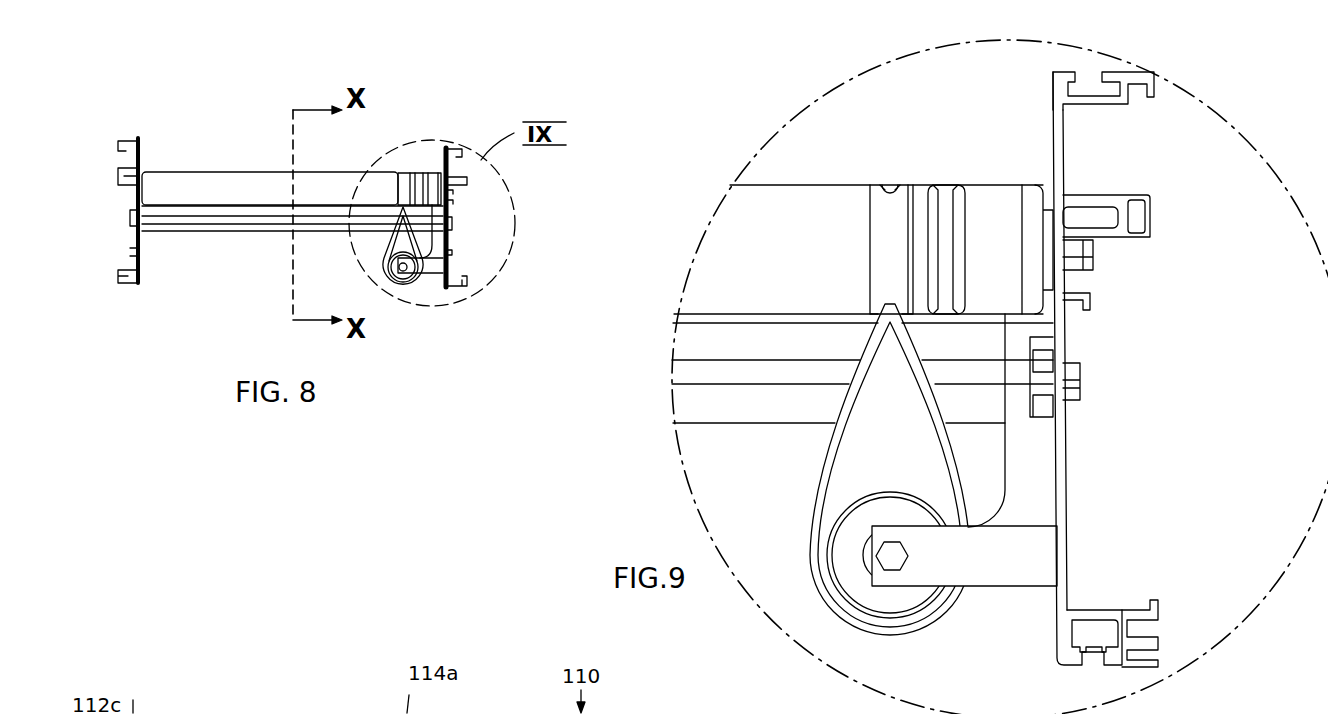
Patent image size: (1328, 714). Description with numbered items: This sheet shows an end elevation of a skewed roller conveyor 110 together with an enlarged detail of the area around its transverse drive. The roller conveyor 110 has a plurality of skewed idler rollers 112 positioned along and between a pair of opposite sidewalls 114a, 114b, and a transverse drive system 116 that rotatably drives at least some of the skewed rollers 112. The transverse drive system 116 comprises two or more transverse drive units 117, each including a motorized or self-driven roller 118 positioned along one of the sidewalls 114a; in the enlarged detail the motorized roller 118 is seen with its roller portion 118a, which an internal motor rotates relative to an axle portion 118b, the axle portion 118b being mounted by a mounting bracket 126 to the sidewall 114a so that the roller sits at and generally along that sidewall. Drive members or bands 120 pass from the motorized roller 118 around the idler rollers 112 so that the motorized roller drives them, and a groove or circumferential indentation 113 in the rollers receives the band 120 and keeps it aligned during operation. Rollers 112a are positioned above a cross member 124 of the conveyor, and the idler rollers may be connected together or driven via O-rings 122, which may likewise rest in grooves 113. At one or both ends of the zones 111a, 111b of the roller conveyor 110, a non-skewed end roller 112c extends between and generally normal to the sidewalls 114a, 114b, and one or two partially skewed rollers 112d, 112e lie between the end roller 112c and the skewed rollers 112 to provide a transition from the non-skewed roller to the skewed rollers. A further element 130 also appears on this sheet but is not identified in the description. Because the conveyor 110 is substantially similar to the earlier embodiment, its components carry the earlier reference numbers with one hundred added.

In FIG. 8, the roller conveyor 110 is at (206, 134).
In FIG. 8, the zone 111a is at (309, 710).
In FIG. 9, the zone 111b is at (835, 713).
In FIG. 8, the skewed idler roller 112 is at (360, 704).
In FIG. 8, the roller 112a is at (363, 703).
In FIG. 8, the end roller 112c is at (225, 184).
In FIG. 9, the end roller 112c is at (783, 200).
In FIG. 8, the partially skewed roller 112d is at (145, 680).
In FIG. 9, the partially skewed roller 112d is at (1175, 704).
In FIG. 8, the partially skewed roller 112e is at (185, 712).
In FIG. 9, the groove or circumferential indentation 113 is at (882, 258).
In FIG. 8, the sidewall 114a is at (447, 233).
In FIG. 9, the sidewall 114a is at (1068, 443).
In FIG. 8, the sidewall 114b is at (137, 259).
In FIG. 8, the transverse drive system 116 is at (417, 155).
In FIG. 9, the transverse drive system 116 is at (1170, 326).
In FIG. 8, the transverse drive unit 117 is at (369, 244).
In FIG. 9, the transverse drive unit 117 is at (1102, 403).
In FIG. 8, the motorized roller 118 is at (403, 277).
In FIG. 9, the motorized roller 118 is at (893, 608).
In FIG. 9, the roller portion 118a is at (867, 470).
In FIG. 9, the axle portion 118b is at (897, 557).
In FIG. 8, the drive member or band 120 is at (383, 253).
In FIG. 9, the drive member or band 120 is at (833, 483).
In FIG. 9, the O-ring 122 is at (890, 193).
In FIG. 8, the cross member 124 is at (218, 233).
In FIG. 9, the cross member 124 is at (742, 415).
In FIG. 8, the mounting bracket 126 is at (432, 270).
In FIG. 9, the mounting bracket 126 is at (1040, 500).
In FIG. 8, the screen 130 is at (526, 703).